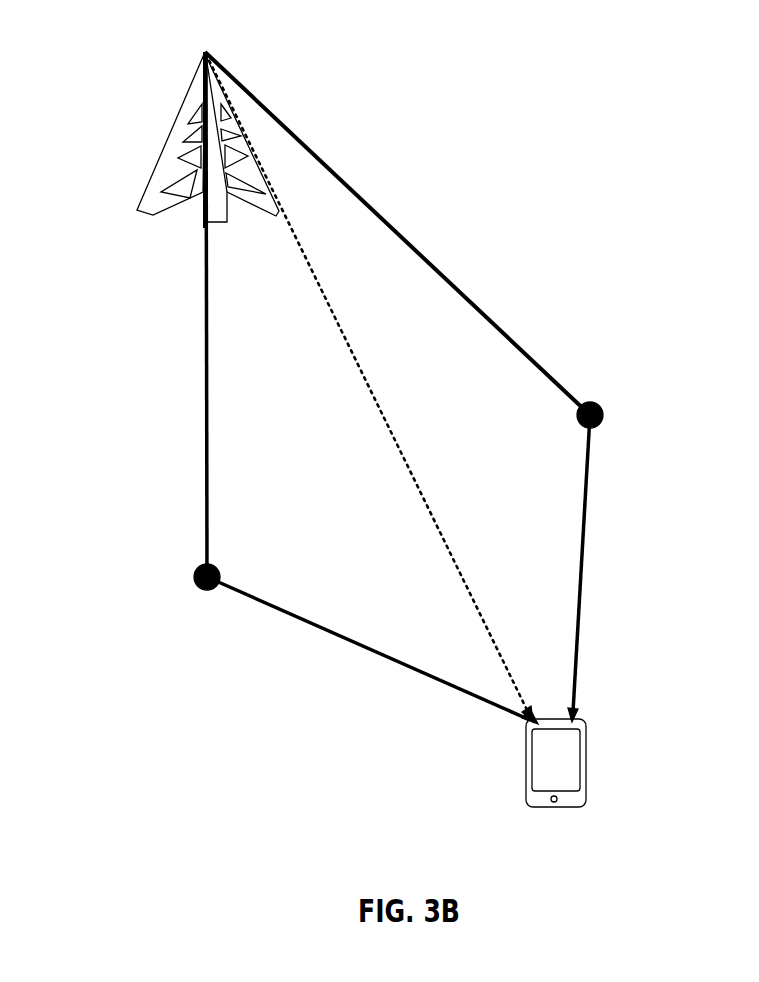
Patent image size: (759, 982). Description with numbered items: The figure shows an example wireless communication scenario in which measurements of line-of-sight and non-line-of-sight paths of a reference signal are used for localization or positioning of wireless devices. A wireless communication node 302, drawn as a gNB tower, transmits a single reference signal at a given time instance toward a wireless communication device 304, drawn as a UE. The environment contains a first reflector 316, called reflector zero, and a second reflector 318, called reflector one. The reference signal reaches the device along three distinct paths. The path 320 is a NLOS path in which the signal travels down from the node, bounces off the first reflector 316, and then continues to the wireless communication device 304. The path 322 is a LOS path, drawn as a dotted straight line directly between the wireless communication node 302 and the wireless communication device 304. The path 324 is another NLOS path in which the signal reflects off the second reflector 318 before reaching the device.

The wireless communication node 302 is at (176, 142).
The wireless communication device 304 is at (585, 745).
The first reflector 316 is at (202, 567).
The second reflector 318 is at (593, 400).
The NLOS path 320 is at (205, 285).
The LOS path 322 is at (327, 300).
The NLOS path 324 is at (372, 206).